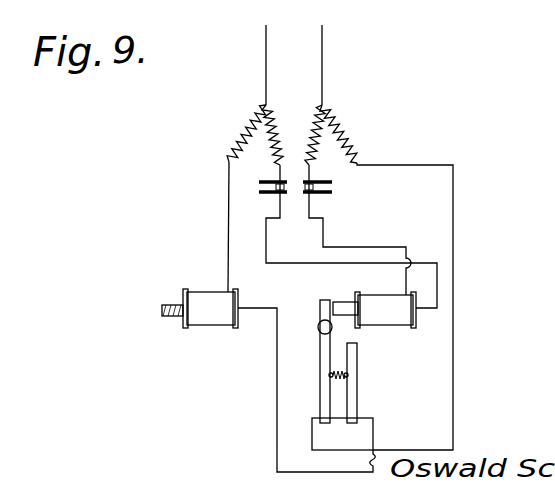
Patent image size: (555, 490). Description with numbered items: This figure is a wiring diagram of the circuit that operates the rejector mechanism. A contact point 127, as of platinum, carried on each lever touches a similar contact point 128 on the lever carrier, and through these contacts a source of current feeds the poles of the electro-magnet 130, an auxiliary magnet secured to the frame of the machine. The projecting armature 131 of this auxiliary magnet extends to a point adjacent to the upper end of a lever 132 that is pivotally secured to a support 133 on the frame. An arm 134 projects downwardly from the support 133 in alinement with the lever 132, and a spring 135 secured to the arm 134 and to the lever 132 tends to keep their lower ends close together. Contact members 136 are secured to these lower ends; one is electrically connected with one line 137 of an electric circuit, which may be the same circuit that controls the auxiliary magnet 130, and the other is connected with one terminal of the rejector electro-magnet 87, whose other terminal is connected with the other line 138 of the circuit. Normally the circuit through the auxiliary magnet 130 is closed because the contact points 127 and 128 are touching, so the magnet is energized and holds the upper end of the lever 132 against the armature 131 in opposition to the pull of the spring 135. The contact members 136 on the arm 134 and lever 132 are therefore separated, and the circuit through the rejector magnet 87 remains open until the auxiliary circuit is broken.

The electro-magnet 87 is at (205, 318).
The contact point 127 is at (275, 181).
The contact point 128 is at (273, 192).
The electro-magnet 130 is at (385, 318).
The armature 131 is at (342, 302).
The lever 132 is at (320, 353).
The support 133 is at (322, 324).
The arm 134 is at (354, 398).
The spring 135 is at (330, 378).
The contact members 136 is at (338, 423).
The line 137 is at (454, 328).
The line 138 is at (228, 247).